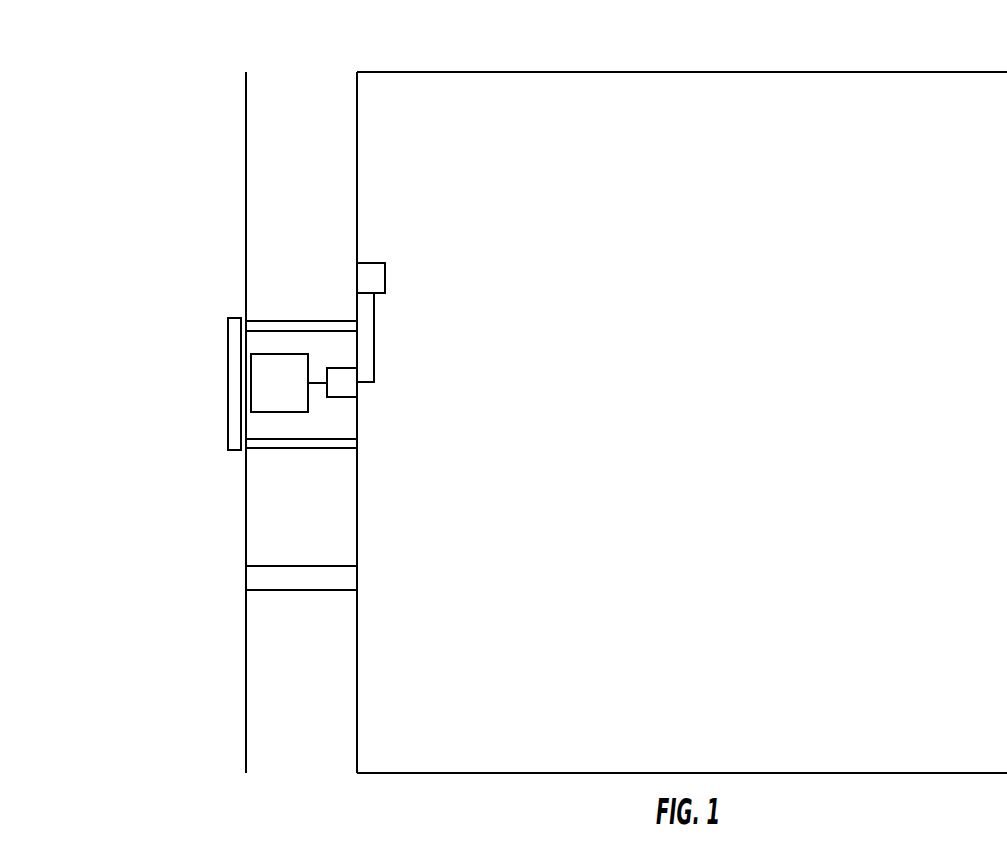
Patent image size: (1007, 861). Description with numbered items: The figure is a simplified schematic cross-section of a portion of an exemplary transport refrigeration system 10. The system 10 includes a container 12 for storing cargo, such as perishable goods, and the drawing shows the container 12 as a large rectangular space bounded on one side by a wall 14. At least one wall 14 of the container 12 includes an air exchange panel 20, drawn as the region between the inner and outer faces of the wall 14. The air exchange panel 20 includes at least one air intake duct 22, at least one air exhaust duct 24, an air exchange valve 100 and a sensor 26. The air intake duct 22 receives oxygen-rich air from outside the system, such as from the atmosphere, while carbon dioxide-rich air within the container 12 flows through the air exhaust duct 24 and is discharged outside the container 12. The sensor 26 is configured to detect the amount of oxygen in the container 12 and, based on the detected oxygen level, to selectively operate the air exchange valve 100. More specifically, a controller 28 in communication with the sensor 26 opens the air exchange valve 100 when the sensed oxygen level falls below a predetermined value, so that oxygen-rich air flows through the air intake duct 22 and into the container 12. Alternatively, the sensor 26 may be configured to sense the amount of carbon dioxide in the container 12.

The transport refrigeration system 10 is at (200, 51).
The container 12 is at (717, 358).
The wall 14 is at (323, 122).
The air exchange panel 20 is at (410, 498).
The air intake duct 22 is at (275, 325).
The air exhaust duct 24 is at (267, 577).
The sensor 26 is at (373, 278).
The controller 28 is at (345, 388).
The air exchange valve 100 is at (224, 405).